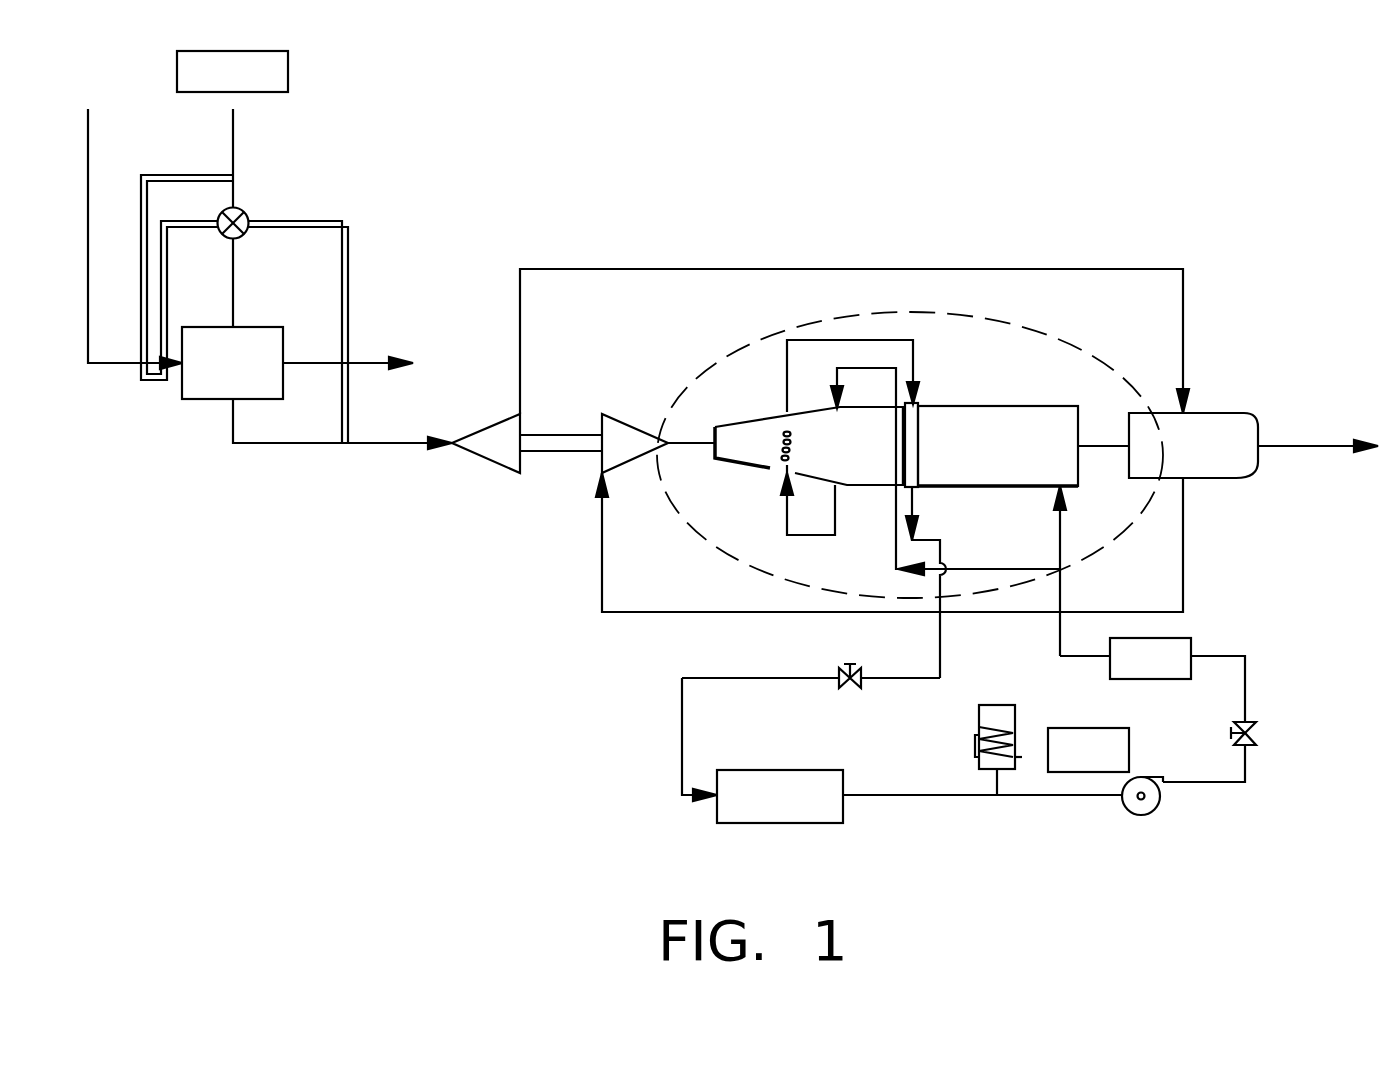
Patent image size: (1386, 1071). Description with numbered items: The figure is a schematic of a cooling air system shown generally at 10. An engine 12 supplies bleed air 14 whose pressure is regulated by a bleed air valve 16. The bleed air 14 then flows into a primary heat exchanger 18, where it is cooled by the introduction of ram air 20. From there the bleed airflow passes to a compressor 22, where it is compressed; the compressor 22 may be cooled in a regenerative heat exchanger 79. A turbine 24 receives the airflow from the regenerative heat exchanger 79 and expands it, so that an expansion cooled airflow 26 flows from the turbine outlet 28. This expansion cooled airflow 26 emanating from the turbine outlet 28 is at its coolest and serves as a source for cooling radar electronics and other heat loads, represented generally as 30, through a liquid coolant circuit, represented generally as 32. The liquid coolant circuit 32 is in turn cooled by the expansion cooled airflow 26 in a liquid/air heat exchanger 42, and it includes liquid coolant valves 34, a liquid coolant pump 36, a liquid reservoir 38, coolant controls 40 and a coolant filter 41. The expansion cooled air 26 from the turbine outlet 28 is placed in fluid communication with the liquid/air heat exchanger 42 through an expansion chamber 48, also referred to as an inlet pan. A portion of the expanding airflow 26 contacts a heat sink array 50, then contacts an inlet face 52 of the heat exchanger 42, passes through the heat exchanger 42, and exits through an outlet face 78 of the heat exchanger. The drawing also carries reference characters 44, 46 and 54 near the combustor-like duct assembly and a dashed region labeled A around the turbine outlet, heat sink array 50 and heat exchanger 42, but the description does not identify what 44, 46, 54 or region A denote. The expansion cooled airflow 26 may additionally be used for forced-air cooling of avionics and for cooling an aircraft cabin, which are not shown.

The cooling air system 10 is at (1093, 137).
The engine 12 is at (217, 88).
The bleed air 14 is at (237, 147).
The bleed air valve 16 is at (243, 210).
The primary heat exchanger 18 is at (217, 378).
The ram air 20 is at (90, 156).
The compressor 22 is at (492, 462).
The turbine 24 is at (621, 418).
The expansion cooled airflow 26 is at (687, 440).
The turbine outlet 28 is at (722, 458).
The heat loads 30 is at (764, 812).
The liquid coolant circuit 32 is at (912, 800).
The liquid coolant valves 34 is at (838, 672).
The liquid coolant pump 36 is at (1150, 815).
The liquid reservoir 38 is at (978, 715).
The coolant controls 40 is at (1072, 765).
The coolant filter 41 is at (1134, 673).
The liquid/air heat exchanger 42 is at (1028, 416).
The mixer 44 is at (915, 425).
The outer duct 46 is at (798, 410).
The expansion chamber 48 is at (873, 408).
The heat sink array 50 is at (799, 447).
The inlet face 52 is at (898, 448).
The fuel injectors 54 is at (783, 443).
The outlet face 78 is at (1079, 464).
The regenerative heat exchanger 79 is at (1222, 413).
The detail region A is at (707, 552).